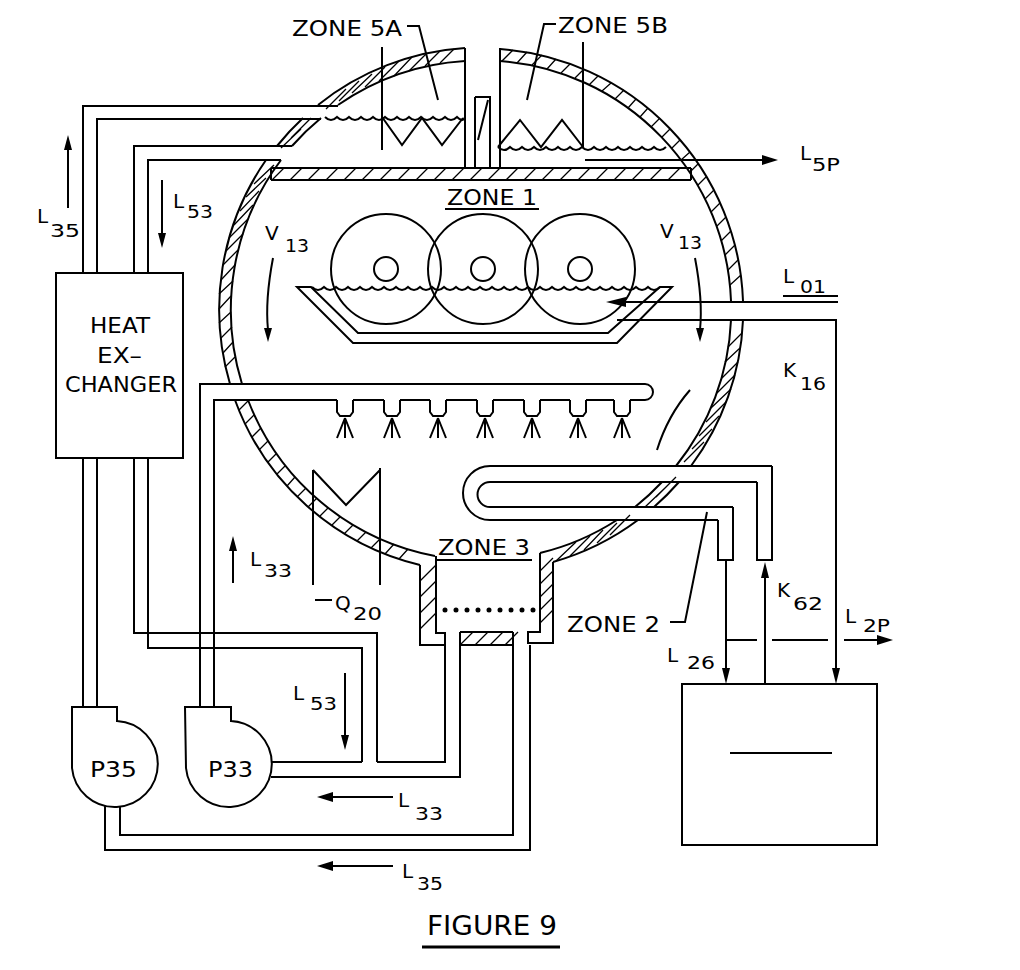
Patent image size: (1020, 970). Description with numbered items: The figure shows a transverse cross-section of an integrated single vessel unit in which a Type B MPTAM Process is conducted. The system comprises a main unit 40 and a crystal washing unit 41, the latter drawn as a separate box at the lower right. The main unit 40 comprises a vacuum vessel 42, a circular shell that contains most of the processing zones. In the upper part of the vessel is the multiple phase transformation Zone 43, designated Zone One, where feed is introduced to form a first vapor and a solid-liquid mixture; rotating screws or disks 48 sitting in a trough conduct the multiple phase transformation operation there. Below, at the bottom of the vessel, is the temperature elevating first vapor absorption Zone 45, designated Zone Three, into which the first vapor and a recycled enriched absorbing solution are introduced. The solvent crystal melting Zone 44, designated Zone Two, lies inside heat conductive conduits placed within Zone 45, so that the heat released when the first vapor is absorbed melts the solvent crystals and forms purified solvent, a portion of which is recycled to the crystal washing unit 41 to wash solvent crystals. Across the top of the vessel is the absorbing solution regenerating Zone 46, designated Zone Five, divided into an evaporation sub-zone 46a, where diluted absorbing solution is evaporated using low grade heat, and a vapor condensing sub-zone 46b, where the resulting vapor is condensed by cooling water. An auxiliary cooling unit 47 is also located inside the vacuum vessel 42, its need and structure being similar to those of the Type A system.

The main unit 40 is at (666, 367).
The crystal washing unit 41 is at (795, 799).
The vacuum vessel 42 is at (622, 93).
The multiple phase transformation zone 43 is at (319, 348).
The solvent crystal melting zone 44 is at (682, 512).
The temperature elevating first vapor absorption zone 45 is at (502, 595).
The absorbing solution regenerating zone 46 is at (487, 97).
The evaporation sub-zone 46a is at (367, 160).
The vapor condensing sub-zone 46b is at (608, 128).
The auxiliary cooling unit 47 is at (368, 485).
The rotating screws or disks 48 is at (649, 209).